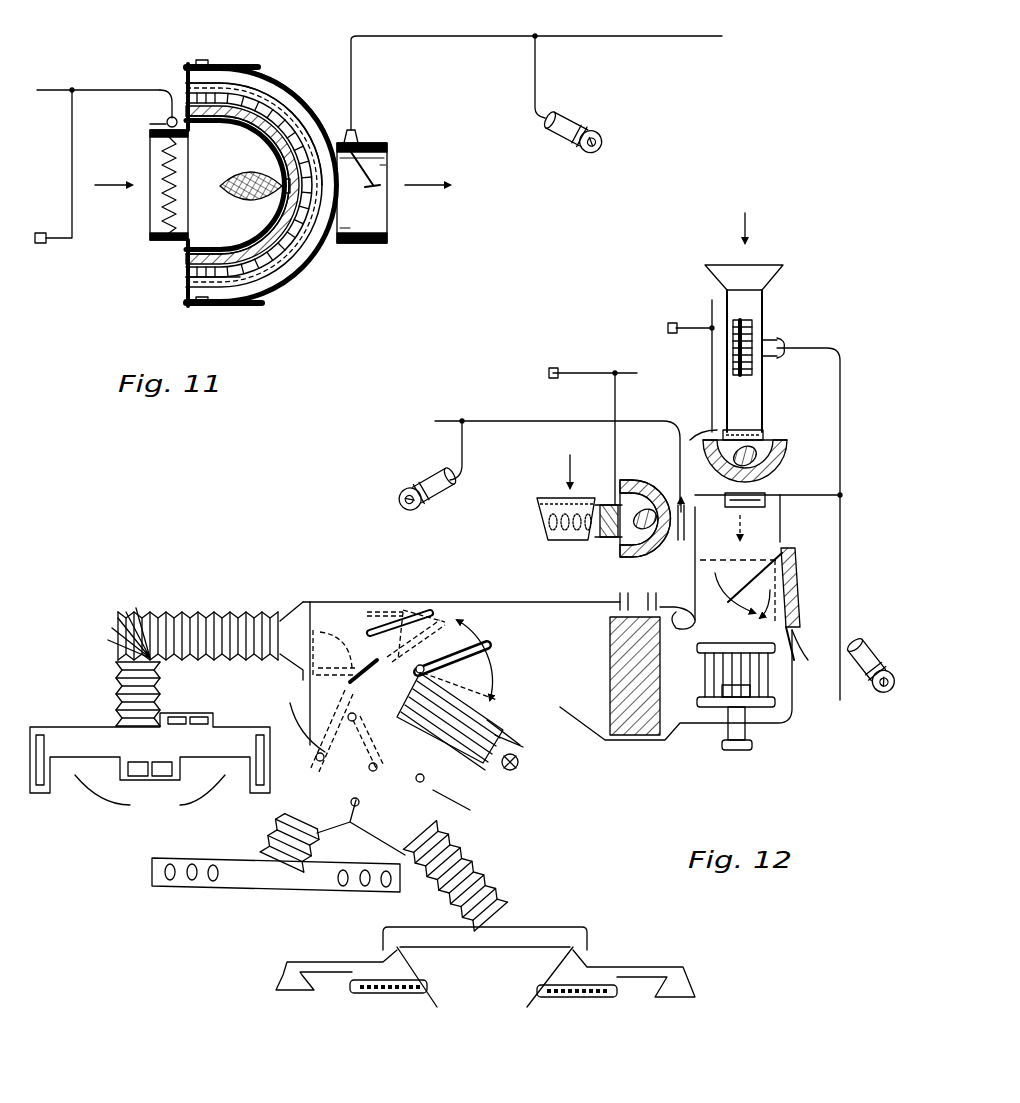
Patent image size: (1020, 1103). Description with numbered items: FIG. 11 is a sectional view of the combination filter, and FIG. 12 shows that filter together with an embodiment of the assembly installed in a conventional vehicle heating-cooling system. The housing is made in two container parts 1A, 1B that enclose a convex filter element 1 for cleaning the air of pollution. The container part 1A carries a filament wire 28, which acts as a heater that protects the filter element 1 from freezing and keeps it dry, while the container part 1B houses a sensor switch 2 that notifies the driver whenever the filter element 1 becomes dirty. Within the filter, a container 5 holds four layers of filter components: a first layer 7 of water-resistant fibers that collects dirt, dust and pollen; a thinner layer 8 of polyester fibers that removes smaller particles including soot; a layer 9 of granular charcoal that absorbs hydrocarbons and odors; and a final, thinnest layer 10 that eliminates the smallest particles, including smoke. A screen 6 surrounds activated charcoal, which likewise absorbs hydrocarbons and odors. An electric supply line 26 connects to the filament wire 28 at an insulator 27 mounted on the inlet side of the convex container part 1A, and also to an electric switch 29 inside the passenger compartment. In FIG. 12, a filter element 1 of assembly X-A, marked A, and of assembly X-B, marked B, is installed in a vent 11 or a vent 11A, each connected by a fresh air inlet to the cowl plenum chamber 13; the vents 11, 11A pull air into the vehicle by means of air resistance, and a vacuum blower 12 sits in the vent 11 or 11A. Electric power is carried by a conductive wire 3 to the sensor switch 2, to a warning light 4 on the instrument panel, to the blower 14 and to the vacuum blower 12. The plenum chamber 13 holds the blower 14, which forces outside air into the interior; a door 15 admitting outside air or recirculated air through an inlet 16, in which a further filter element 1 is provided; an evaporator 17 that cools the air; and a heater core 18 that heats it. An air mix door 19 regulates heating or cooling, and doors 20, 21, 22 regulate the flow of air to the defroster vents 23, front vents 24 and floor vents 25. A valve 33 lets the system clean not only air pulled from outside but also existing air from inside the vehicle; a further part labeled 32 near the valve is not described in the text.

In FIG. 11, the filter element 1 is at (327, 213).
In FIG. 12, the filter element 1 is at (785, 446).
In FIG. 11, the container part 1A is at (192, 64).
In FIG. 11, the container part 1B is at (256, 66).
In FIG. 11, the sensor switch 2 is at (385, 184).
In FIG. 12, the sensor switch 2 is at (770, 500).
In FIG. 11, the conductive wire 3 is at (588, 36).
In FIG. 12, the conductive wire 3 is at (452, 419).
In FIG. 11, the warning light 4 is at (566, 117).
In FIG. 12, the warning light 4 is at (432, 486).
In FIG. 11, the container 5 is at (200, 88).
In FIG. 11, the screen 6 is at (222, 184).
In FIG. 11, the first layer 7 is at (167, 122).
In FIG. 11, the second or third layer 8 is at (195, 262).
In FIG. 11, the layer of granular charcoal 9 is at (195, 273).
In FIG. 11, the fourth layer 10 is at (192, 301).
In FIG. 12, the vent 11 is at (718, 281).
In FIG. 12, the vent 11A is at (538, 500).
In FIG. 12, the vacuum blower 12 is at (765, 351).
In FIG. 12, the cowl plenum chamber 13 is at (540, 604).
In FIG. 12, the blower 14 is at (754, 746).
In FIG. 12, the door 15 is at (782, 557).
In FIG. 12, the inlet 16 is at (796, 586).
In FIG. 12, the evaporator 17 is at (612, 723).
In FIG. 12, the heater core 18 is at (490, 779).
In FIG. 12, the air mix door 19 is at (478, 626).
In FIG. 12, the door 20 is at (398, 631).
In FIG. 12, the door 21 is at (316, 630).
In FIG. 12, the door 22 is at (345, 731).
In FIG. 12, the defroster vents 23 is at (527, 1007).
In FIG. 12, the front vents 24 is at (150, 768).
In FIG. 12, the floor vents 25 is at (285, 892).
In FIG. 11, the electric supply line 26 is at (50, 88).
In FIG. 12, the electric supply line 26 is at (712, 300).
In FIG. 11, the insulator 27 is at (165, 117).
In FIG. 12, the insulator 27 is at (748, 432).
In FIG. 11, the filament wire 28 is at (158, 198).
In FIG. 12, the filament wire 28 is at (760, 430).
In FIG. 11, the electric switch 29 is at (40, 245).
In FIG. 12, the electric switch 29 is at (668, 328).
In FIG. 12, the valve arm 32 is at (794, 651).
In FIG. 12, the valve 33 is at (794, 660).
In FIG. 12, the assembly X- A is at (722, 440).
In FIG. 12, the assembly X- B is at (632, 557).